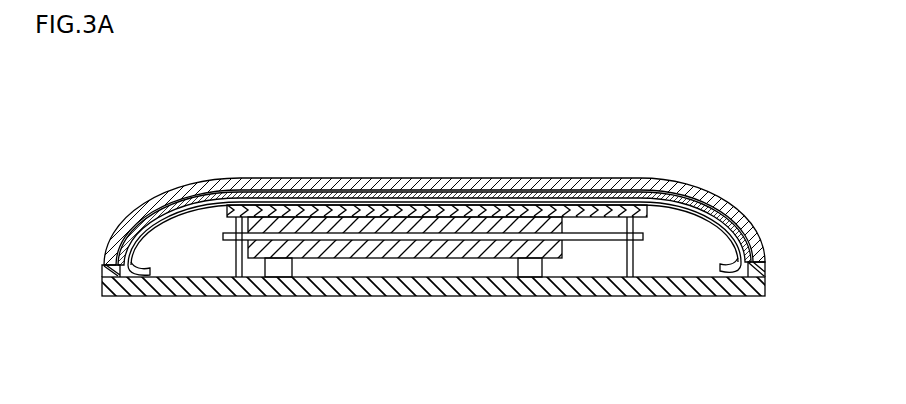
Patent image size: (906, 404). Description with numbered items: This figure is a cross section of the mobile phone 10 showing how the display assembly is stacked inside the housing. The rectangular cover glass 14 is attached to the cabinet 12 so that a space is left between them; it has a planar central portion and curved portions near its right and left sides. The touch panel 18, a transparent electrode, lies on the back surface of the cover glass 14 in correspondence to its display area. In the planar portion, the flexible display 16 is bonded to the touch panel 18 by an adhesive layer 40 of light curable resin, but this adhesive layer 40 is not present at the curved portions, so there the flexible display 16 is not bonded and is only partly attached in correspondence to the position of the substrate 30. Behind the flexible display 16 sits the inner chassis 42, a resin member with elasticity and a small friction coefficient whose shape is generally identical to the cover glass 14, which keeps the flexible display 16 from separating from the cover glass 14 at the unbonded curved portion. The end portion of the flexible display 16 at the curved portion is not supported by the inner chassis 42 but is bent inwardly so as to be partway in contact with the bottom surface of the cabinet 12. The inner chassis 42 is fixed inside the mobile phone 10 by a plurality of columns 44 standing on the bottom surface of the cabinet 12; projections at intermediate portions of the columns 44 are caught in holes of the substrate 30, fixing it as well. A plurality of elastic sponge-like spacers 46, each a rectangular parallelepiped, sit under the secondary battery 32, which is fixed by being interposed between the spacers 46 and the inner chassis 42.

The mobile phone 10 is at (265, 109).
The cabinet 12 is at (748, 297).
The cover glass 14 is at (742, 220).
The flexible display 16 is at (118, 278).
The touch panel 18 is at (128, 228).
The substrate 30 is at (582, 238).
The secondary battery 32 is at (388, 250).
The adhesive layer 40 is at (570, 189).
The inner chassis 42 is at (707, 237).
The column 44 is at (236, 277).
The spacer 46 is at (280, 277).